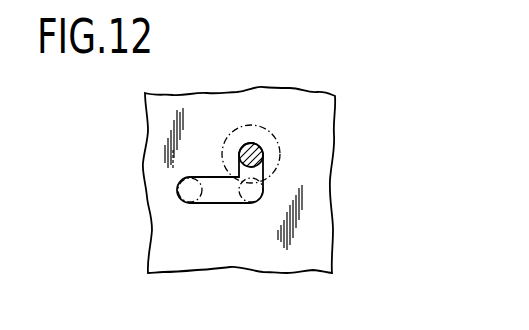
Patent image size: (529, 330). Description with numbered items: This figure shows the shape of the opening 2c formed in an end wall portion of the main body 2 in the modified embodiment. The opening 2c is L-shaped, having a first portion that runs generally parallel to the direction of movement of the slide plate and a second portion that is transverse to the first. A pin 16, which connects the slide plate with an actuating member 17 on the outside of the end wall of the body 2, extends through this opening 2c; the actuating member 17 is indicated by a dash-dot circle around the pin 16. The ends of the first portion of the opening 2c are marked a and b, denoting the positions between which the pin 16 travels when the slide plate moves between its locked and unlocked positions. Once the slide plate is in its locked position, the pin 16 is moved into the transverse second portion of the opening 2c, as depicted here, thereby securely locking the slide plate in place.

The main body 2 is at (330, 240).
The opening 2c is at (215, 190).
The pin 16 is at (263, 155).
The actuating member 17 is at (278, 149).
The slot end position a is at (253, 198).
The slot end position b is at (195, 197).